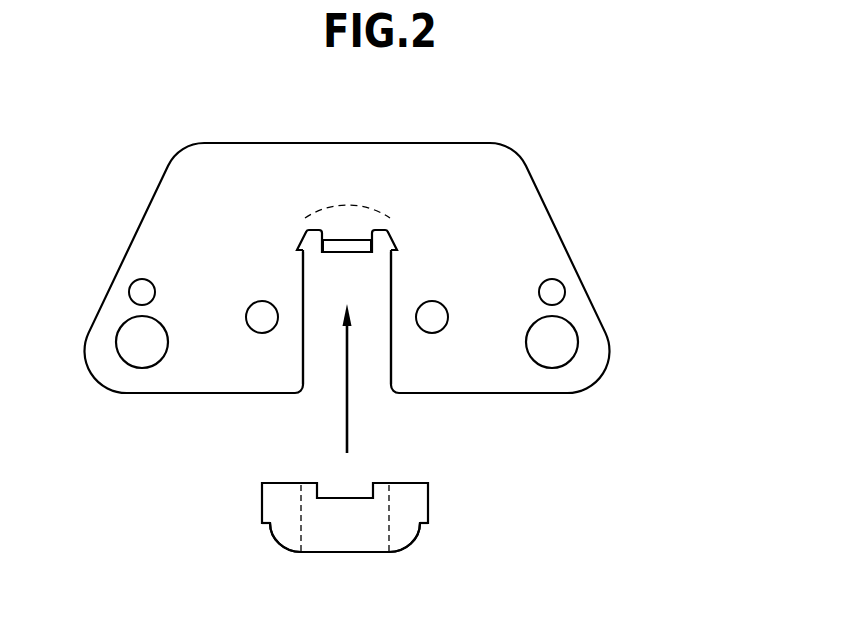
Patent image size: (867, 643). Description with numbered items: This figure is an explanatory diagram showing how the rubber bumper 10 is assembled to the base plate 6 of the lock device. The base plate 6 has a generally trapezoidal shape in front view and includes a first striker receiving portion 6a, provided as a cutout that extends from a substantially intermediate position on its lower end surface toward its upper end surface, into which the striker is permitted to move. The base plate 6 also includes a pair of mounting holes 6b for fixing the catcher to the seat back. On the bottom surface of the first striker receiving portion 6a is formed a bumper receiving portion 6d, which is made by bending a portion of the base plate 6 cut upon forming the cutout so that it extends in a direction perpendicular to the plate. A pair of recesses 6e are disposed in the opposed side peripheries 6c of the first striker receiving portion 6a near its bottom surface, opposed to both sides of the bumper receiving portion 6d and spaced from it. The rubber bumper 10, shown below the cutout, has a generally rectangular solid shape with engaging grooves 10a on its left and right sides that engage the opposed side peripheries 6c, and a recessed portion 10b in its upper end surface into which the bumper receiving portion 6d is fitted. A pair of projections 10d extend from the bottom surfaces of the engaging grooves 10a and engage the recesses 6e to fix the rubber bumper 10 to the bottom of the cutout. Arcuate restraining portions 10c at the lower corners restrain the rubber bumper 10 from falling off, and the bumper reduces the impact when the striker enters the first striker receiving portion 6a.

The base plate 6 is at (606, 221).
The first striker receiving portion 6a is at (360, 269).
The mounting holes 6b is at (130, 345).
The opposed side peripheries 6c is at (303, 343).
The bumper receiving portion 6d is at (336, 243).
The recesses 6e is at (294, 250).
The rubber bumper 10 is at (577, 508).
The engaging grooves 10a is at (293, 527).
The recessed portion 10b is at (348, 496).
The restraining portions 10c is at (294, 546).
The projections 10d is at (300, 494).